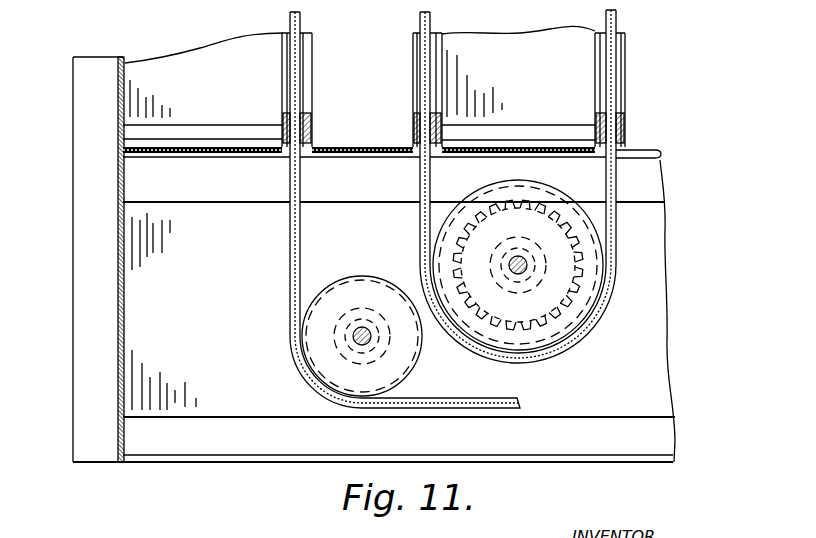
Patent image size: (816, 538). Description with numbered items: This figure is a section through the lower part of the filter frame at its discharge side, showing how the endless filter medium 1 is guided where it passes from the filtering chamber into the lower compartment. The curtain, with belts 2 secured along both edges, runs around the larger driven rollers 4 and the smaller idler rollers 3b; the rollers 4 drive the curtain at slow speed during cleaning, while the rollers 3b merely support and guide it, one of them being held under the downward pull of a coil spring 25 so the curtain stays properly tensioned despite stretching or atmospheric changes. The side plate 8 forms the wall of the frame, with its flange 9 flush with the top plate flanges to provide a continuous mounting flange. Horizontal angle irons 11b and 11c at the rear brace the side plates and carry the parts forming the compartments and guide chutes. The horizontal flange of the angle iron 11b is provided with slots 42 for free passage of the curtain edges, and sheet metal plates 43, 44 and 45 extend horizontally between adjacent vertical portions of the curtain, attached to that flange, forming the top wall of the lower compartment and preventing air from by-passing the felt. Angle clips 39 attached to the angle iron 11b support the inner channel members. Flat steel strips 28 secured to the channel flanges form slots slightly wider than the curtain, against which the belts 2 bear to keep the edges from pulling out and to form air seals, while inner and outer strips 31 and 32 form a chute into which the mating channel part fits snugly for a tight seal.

The filter medium 1 is at (613, 90).
The belts 2 is at (606, 15).
The rollers 4 is at (612, 220).
The side plates 8 is at (125, 298).
The flanges 9 is at (98, 259).
The angle iron 11b is at (650, 168).
The angle iron 11c is at (662, 433).
The coil spring 25 is at (394, 204).
The outer sheet metal strip 32 is at (315, 73).
The inner sheet metal strip 31 is at (401, 73).
The flat steel strips 28 is at (420, 73).
The angle clips 39 is at (240, 132).
The slots 42 is at (415, 158).
The sheet metal plate 43 is at (352, 148).
The sheet metal plate 44 is at (477, 152).
The sheet metal plate 45 is at (213, 152).
The rollers 3b is at (413, 372).